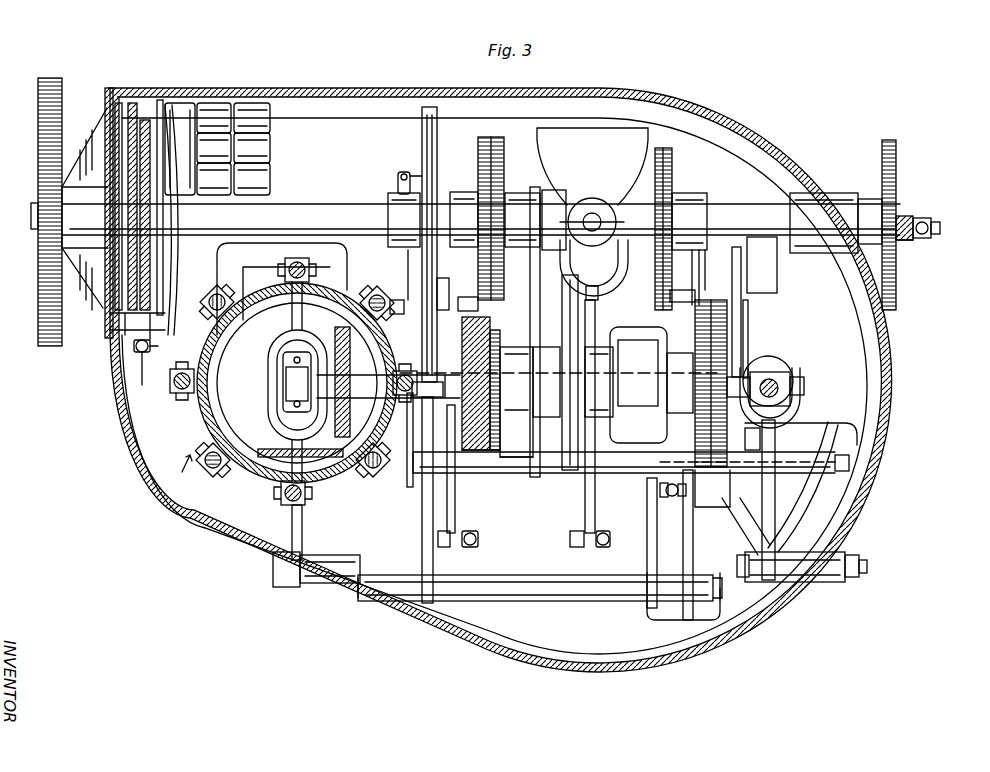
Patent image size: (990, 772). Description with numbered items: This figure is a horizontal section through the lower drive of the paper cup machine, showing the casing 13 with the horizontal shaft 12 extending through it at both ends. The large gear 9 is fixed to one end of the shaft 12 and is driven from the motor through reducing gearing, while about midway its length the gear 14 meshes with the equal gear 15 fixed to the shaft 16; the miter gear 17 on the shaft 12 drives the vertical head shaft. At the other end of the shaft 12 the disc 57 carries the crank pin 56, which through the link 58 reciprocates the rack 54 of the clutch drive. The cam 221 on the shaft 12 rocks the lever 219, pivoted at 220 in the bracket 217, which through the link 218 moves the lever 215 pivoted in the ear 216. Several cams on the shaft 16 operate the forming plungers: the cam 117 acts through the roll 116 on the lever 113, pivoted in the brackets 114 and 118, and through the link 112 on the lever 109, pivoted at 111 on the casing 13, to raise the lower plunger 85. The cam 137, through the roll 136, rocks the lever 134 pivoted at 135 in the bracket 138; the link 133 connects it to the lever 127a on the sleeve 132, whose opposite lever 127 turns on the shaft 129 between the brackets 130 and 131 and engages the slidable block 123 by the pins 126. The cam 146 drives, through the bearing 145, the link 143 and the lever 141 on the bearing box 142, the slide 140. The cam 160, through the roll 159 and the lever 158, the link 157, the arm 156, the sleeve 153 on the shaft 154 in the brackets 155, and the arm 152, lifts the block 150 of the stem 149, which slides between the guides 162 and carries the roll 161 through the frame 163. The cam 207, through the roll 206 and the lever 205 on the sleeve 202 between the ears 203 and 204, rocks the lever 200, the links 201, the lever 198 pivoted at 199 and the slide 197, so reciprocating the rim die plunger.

The large gear 9 is at (38, 145).
The horizontal shaft 12 is at (310, 209).
The casing 13 is at (676, 110).
The gear 14 is at (478, 160).
The gear 15 is at (496, 336).
The shaft 16 is at (694, 352).
The miter gear 17 is at (672, 178).
The rack 54 is at (905, 241).
The crank pin 56 is at (913, 217).
The disc 57 is at (882, 155).
The link 58 is at (928, 237).
The lower plunger 85 is at (776, 376).
The lever 109 is at (765, 523).
The pivot 111 is at (743, 564).
The link 112 is at (754, 450).
The lever 113 is at (742, 305).
The bracket 114 is at (777, 281).
The roll 116 is at (753, 334).
The cam 117 is at (732, 510).
The bracket 118 is at (690, 298).
The slidable block 123 is at (773, 379).
The pin 126 is at (793, 372).
The lever 127 is at (803, 416).
The lever 127a is at (585, 488).
The shaft 129 is at (840, 460).
The bracket 130 is at (808, 508).
The bracket 131 is at (540, 478).
The sleeve 132 is at (624, 462).
The link 133 is at (590, 547).
The lever 134 is at (598, 294).
The pivot 135 is at (622, 252).
The roll 136 is at (552, 348).
The cam 137 is at (580, 318).
The bracket 138 is at (592, 187).
The slide 140 is at (487, 456).
The lever 141 is at (455, 512).
The bearing box 142 is at (502, 476).
The link 143 is at (477, 546).
The bearing 145 is at (393, 482).
The cam 146 is at (472, 290).
The stem 149 is at (397, 412).
The block 150 is at (290, 262).
The arm 152 is at (422, 521).
The sleeve 153 is at (540, 601).
The shaft 154 is at (713, 621).
The bracket 155 is at (719, 590).
The arm 156 is at (647, 557).
The link 157 is at (671, 503).
The lever 158 is at (680, 428).
The roll 159 is at (664, 346).
The cam 160 is at (687, 340).
The roll 161 is at (338, 293).
The guide 162 is at (350, 416).
The frame 163 is at (201, 418).
The slide 197 is at (283, 385).
The lever 198 is at (292, 517).
The pivot 199 is at (273, 582).
The lever 200 is at (268, 348).
The link 201 is at (280, 456).
The sleeve 202 is at (398, 300).
The ear 203 is at (446, 290).
The ear 204 is at (218, 322).
The lever 205 is at (408, 262).
The roll 206 is at (400, 175).
The cam 207 is at (422, 134).
The lever 215 is at (172, 259).
The ear 216 is at (264, 173).
The bracket 217 is at (262, 143).
The link 218 is at (140, 352).
The lever 219 is at (183, 149).
The pivot 220 is at (270, 127).
The cam 221 is at (150, 287).